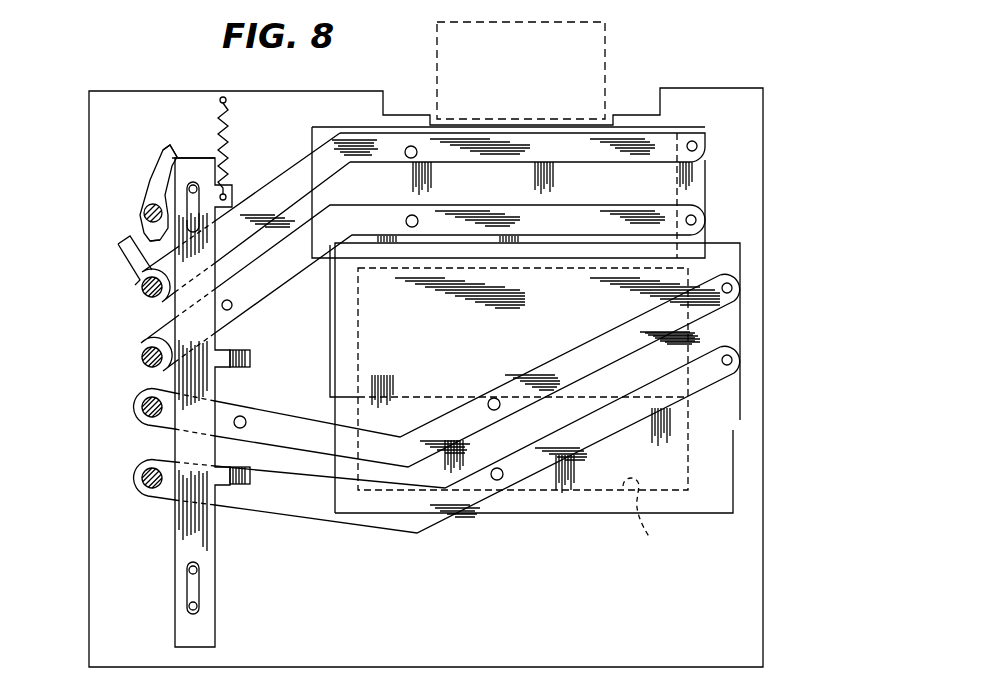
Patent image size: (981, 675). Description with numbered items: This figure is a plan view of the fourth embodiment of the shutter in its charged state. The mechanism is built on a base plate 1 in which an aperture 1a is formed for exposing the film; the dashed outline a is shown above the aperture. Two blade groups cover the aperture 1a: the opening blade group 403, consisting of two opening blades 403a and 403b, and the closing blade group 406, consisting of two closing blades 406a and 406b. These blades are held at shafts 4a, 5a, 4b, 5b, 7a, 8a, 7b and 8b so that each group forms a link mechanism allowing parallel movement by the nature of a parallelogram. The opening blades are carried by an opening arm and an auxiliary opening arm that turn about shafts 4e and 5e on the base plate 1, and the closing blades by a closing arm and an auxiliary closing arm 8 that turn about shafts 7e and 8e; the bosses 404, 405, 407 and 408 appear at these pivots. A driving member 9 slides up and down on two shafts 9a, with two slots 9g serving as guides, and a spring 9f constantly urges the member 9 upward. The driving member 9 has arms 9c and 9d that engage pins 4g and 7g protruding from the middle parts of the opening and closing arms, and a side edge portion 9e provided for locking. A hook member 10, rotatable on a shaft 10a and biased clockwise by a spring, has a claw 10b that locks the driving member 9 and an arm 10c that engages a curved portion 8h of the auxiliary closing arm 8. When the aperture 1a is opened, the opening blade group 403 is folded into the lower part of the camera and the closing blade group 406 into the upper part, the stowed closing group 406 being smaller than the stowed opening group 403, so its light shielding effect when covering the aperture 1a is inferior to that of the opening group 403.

The base plate 1 is at (752, 559).
The aperture 1a is at (652, 521).
The cassette a is at (575, 52).
The shaft 4a is at (742, 288).
The shaft 4b is at (489, 402).
The shaft 4e is at (147, 423).
The pin 4g is at (246, 415).
The shaft 5a is at (726, 354).
The shaft 5b is at (498, 481).
The shaft 5e is at (148, 493).
The shaft 7a is at (703, 220).
The shaft 7b is at (410, 215).
The shaft 7e is at (147, 366).
The pin 7g is at (234, 308).
The auxiliary closing arm 8 is at (265, 192).
The shaft 8a is at (693, 139).
The shaft 8b is at (410, 146).
The shaft 8e is at (146, 298).
The curved portion 8h is at (114, 237).
The driving member 9 is at (187, 536).
The shaft 9a is at (190, 205).
The arm 9c is at (240, 486).
The arm 9d is at (250, 358).
The side edge portion 9e is at (180, 158).
The spring 9f is at (229, 136).
The slot 9g is at (153, 185).
The hook member 10 is at (150, 190).
The shaft 10a is at (142, 210).
The claw 10b is at (172, 150).
The arm 10c is at (146, 238).
The opening blade group 403 is at (438, 416).
The opening blade 403a is at (421, 372).
The opening blade 403b is at (421, 443).
The lever boss 404 is at (140, 399).
The lever boss 405 is at (143, 472).
The closing blade group 406 is at (438, 222).
The closing blade 406a is at (582, 122).
The closing blade 406b is at (418, 281).
The lever boss 407 is at (143, 346).
The lever boss 408 is at (140, 285).